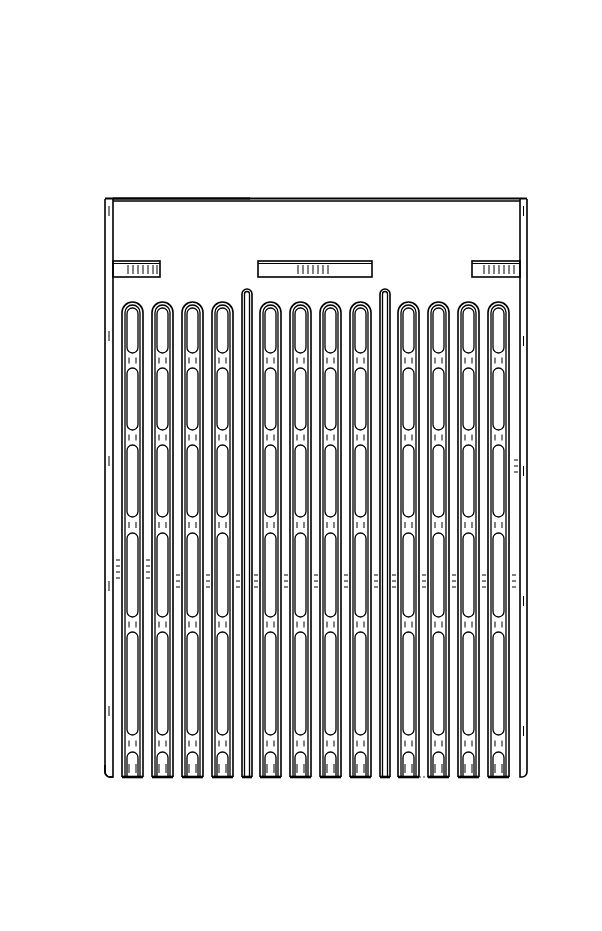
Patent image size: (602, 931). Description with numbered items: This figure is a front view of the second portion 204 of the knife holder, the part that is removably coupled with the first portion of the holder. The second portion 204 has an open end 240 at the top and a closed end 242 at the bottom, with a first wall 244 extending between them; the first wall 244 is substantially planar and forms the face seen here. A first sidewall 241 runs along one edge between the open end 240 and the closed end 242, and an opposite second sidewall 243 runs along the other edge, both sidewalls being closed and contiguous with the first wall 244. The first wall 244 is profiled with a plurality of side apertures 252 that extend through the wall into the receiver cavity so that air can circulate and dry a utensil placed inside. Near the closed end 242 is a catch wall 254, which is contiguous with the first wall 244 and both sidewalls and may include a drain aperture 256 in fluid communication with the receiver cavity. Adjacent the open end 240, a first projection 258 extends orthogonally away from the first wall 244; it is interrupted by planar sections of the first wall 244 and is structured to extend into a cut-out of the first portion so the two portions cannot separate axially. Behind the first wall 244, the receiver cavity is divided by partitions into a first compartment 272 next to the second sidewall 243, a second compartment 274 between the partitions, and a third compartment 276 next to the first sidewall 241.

The second portion 204 is at (112, 157).
The open end 240 is at (92, 197).
The first sidewall 241 is at (107, 355).
The closed end 242 is at (95, 775).
The second sidewall 243 is at (527, 447).
The first wall 244 is at (148, 440).
The side aperture 252 is at (128, 557).
The catch wall 254 is at (482, 777).
The drain aperture 256 is at (438, 783).
The first projection 258 is at (128, 264).
The first compartment 272 is at (463, 185).
The second compartment 274 is at (328, 185).
The third compartment 276 is at (180, 188).